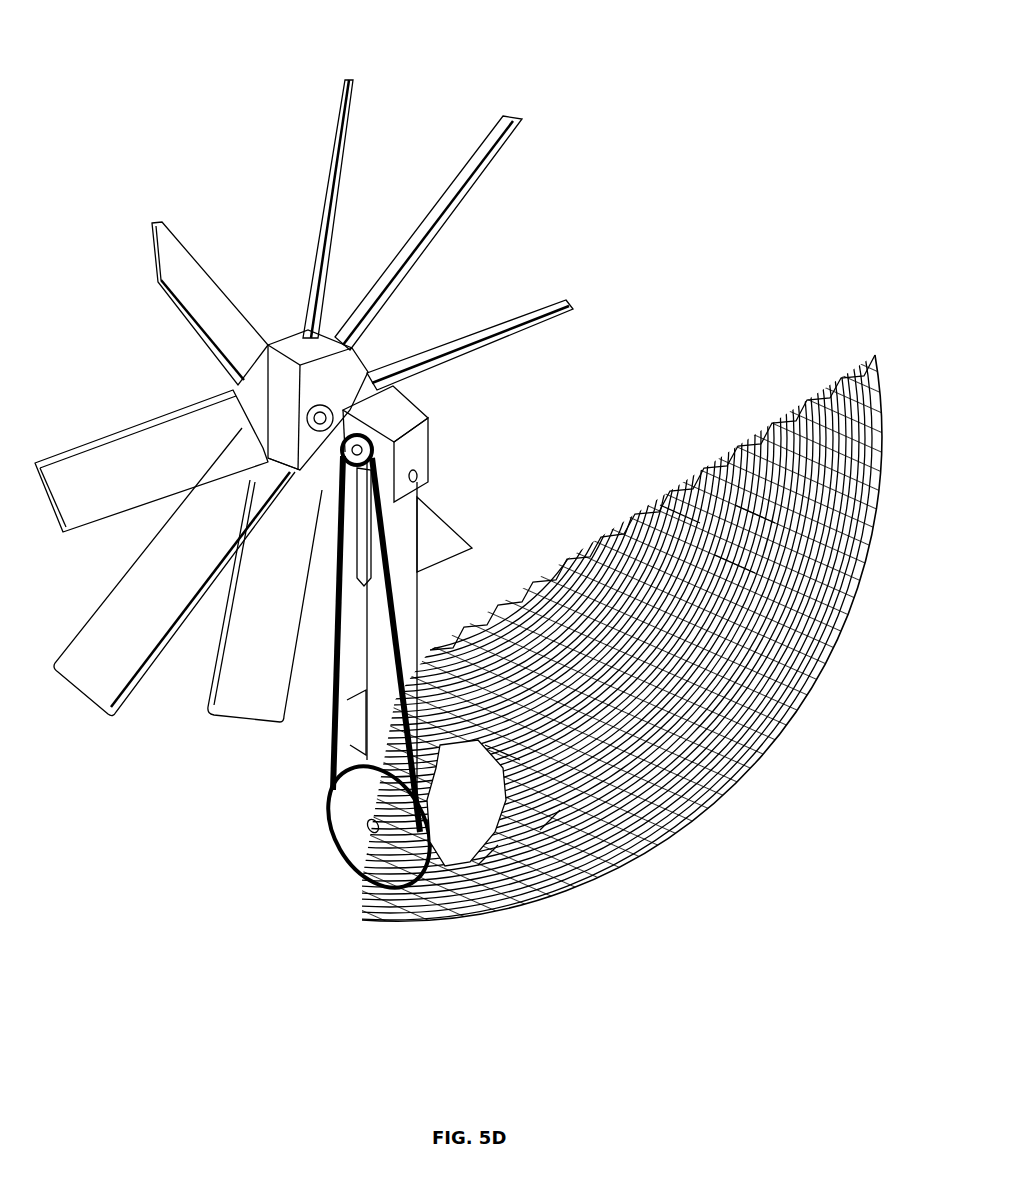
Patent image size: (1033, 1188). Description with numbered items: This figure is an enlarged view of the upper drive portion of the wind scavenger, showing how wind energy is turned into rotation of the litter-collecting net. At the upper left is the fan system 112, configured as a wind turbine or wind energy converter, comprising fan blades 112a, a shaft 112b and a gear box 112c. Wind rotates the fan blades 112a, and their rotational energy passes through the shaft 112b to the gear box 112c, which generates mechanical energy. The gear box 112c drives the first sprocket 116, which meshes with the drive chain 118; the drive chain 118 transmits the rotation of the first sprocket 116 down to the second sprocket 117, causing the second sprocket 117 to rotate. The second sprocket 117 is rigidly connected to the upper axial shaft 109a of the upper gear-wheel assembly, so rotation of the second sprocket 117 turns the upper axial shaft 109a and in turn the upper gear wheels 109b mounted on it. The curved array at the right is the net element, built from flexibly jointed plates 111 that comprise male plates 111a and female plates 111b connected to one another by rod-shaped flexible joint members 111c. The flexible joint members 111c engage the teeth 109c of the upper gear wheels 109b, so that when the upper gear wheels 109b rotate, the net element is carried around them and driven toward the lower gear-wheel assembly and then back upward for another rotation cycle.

The fan system 112 is at (270, 300).
The fan blades 112a is at (530, 307).
The shaft 112b is at (330, 425).
The gear box 112c is at (413, 421).
The first sprocket 116 is at (380, 456).
The drive chain 118 is at (400, 615).
The second sprocket 117 is at (357, 796).
The flexibly jointed plates 111 is at (855, 317).
The male plates 111a is at (672, 500).
The female plates 111b is at (742, 555).
The flexible joint members 111c is at (747, 502).
The upper axial shaft 109a is at (437, 780).
The upper gear wheels 109b is at (545, 826).
The teeth 109c is at (492, 742).